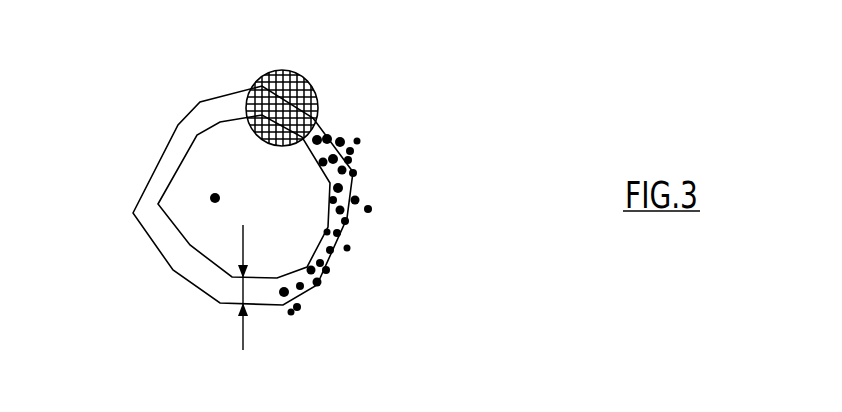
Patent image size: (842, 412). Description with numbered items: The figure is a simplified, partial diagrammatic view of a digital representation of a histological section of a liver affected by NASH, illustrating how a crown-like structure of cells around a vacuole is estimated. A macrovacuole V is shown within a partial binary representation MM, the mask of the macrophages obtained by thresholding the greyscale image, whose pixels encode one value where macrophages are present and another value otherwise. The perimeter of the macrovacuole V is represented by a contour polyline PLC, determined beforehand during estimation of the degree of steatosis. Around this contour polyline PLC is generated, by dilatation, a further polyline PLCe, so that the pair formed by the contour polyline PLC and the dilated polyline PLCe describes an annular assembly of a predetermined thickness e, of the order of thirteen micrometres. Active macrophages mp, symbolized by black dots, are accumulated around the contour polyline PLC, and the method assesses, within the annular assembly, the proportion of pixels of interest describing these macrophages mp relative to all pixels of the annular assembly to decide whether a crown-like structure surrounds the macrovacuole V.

The contour polyline PLC is at (187, 155).
The polyline of a crown-like structure obtained by dilatation PLCe is at (155, 243).
The macrovacuole V is at (212, 197).
The predetermined thickness e is at (228, 287).
The active macrophage mp is at (358, 187).
The binary digital representation MM is at (451, 250).